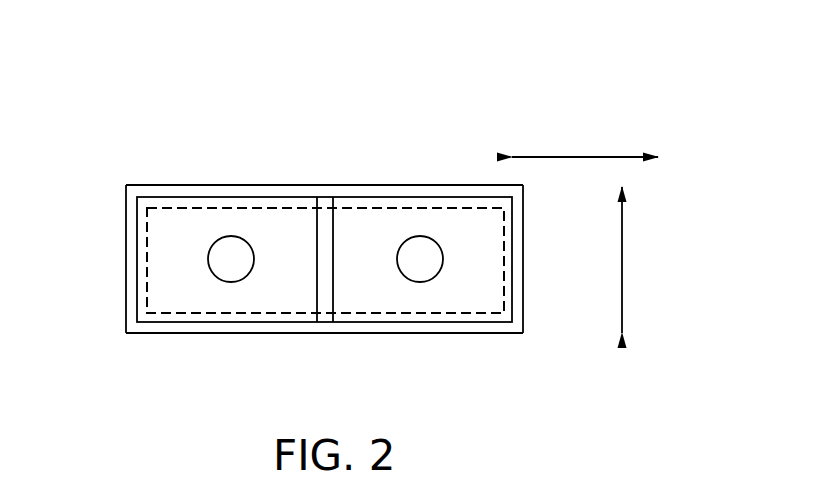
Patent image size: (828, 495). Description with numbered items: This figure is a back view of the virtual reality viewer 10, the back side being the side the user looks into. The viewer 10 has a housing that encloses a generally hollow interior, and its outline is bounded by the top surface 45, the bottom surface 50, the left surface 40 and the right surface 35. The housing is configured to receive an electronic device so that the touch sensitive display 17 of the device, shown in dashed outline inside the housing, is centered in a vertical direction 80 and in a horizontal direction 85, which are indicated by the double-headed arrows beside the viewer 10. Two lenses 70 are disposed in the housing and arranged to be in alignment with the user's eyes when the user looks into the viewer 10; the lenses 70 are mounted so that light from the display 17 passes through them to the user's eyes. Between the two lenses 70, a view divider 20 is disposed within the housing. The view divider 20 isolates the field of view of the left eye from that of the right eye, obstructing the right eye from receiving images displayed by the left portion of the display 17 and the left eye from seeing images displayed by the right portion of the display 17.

The viewer 10 is at (457, 160).
The touch sensitive display 17 is at (283, 221).
The view divider 20 is at (325, 310).
The right surface 35 is at (523, 255).
The left surface 40 is at (126, 284).
The top surface 45 is at (211, 186).
The bottom surface 50 is at (408, 334).
The lenses 70 is at (220, 271).
The vertical direction 80 is at (622, 255).
The horizontal direction 85 is at (595, 157).